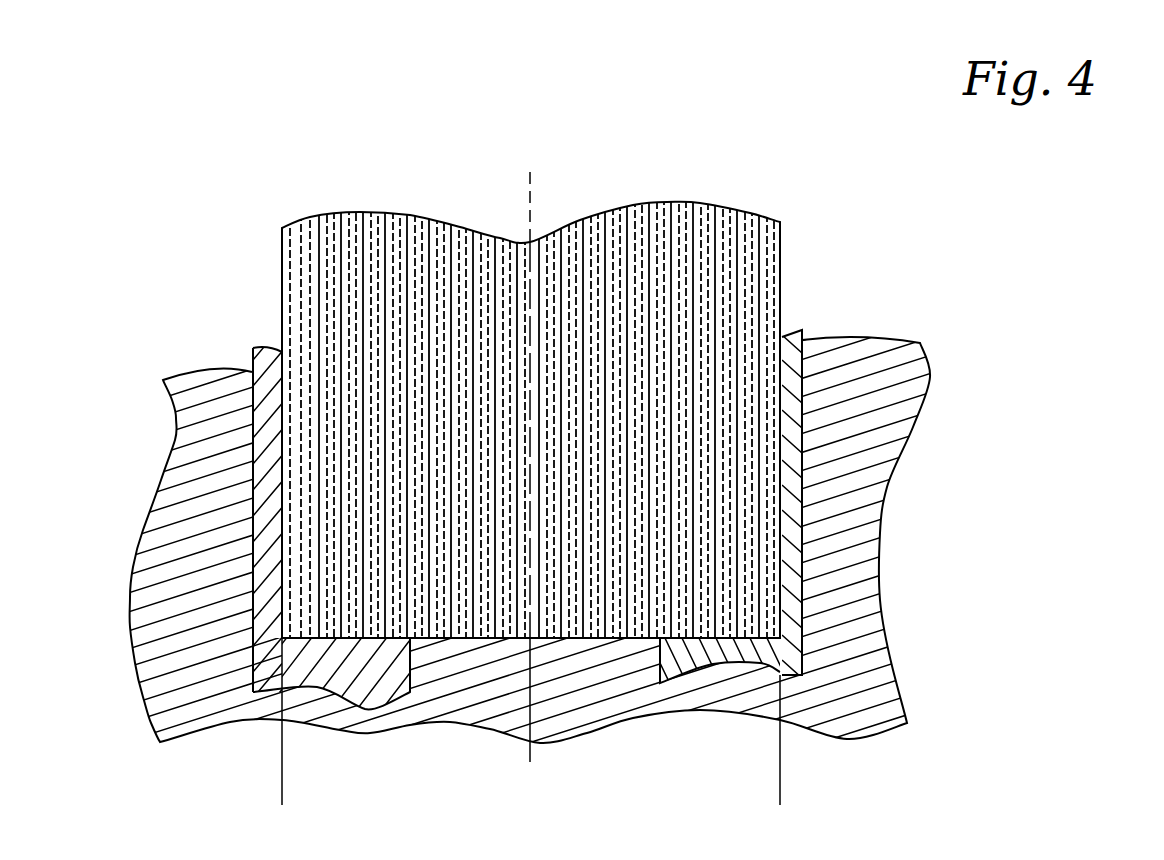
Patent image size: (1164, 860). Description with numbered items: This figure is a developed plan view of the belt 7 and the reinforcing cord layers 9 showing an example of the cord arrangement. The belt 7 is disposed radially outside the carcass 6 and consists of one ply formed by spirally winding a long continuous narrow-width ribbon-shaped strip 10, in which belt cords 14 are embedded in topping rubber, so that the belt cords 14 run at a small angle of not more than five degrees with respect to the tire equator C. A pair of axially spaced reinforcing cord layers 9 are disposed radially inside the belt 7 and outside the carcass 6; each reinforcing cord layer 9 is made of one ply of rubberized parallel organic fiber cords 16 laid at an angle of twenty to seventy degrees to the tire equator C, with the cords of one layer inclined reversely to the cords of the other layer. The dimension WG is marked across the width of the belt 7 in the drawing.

The carcass 6 is at (886, 624).
The belt 7 is at (566, 379).
The reinforcing cord layer 9 is at (518, 525).
The ribbon-shaped strip 10 is at (417, 218).
The belt cord 14 is at (375, 248).
The organic fiber cord 16 is at (255, 425).
The tire equator C is at (530, 187).
The gap width WG is at (780, 793).